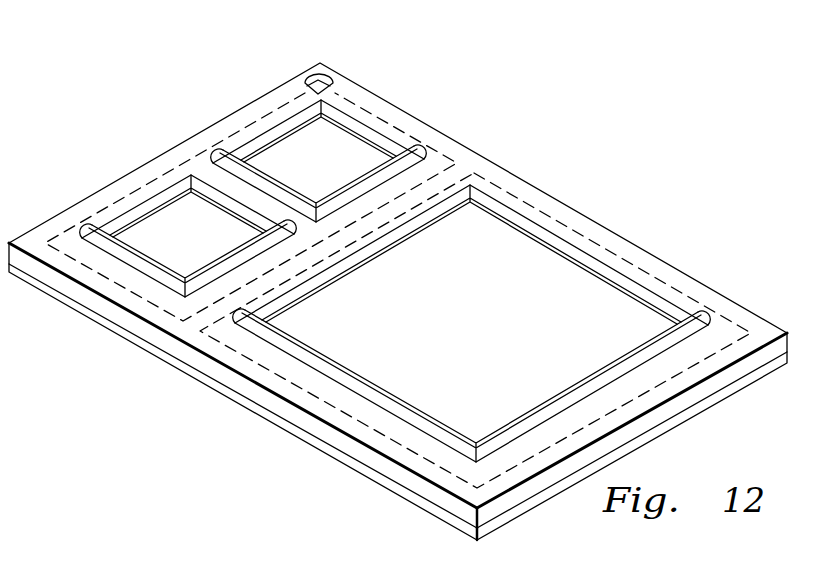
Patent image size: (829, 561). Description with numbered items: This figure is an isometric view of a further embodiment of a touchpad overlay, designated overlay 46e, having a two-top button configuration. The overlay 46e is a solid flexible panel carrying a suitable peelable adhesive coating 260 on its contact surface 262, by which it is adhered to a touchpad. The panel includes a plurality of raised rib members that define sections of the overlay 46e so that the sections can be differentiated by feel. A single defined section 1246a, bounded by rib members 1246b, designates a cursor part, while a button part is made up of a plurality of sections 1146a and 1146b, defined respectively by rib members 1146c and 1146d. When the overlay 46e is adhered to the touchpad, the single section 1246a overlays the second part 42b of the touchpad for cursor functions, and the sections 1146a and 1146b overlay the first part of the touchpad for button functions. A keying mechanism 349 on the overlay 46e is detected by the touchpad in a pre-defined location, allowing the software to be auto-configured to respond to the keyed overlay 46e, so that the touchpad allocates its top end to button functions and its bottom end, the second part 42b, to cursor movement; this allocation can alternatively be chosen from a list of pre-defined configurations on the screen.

The keying mechanism 349 is at (324, 76).
The section 1146a is at (148, 240).
The section 1146b is at (275, 167).
The rib members 1146c is at (182, 185).
The rib members 1146d is at (300, 117).
The single defined section 1246a is at (498, 243).
The rib members 1246b is at (608, 275).
The second part 42b is at (380, 122).
The overlay 46e is at (457, 143).
The contact surface 262 is at (315, 438).
The peelable adhesive coating 260 is at (395, 493).